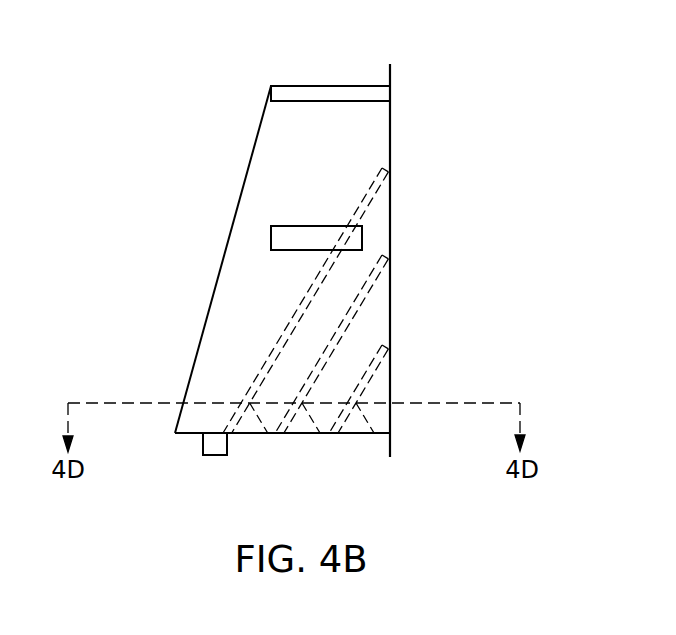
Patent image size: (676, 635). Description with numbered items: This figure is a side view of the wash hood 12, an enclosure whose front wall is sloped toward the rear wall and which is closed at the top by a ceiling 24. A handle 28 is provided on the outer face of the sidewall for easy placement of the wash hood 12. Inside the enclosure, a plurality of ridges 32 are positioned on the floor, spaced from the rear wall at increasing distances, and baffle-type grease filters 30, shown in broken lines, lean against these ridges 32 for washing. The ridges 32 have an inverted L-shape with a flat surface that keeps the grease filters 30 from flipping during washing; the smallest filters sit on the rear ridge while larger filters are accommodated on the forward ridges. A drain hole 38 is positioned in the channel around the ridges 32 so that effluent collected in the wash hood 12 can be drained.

The wash hood 12 is at (418, 224).
The ceiling 24 is at (328, 86).
The handle 28 is at (271, 243).
The baffle-type grease filter 30 is at (345, 326).
The ridge 32 is at (310, 417).
The drain hole 38 is at (215, 455).